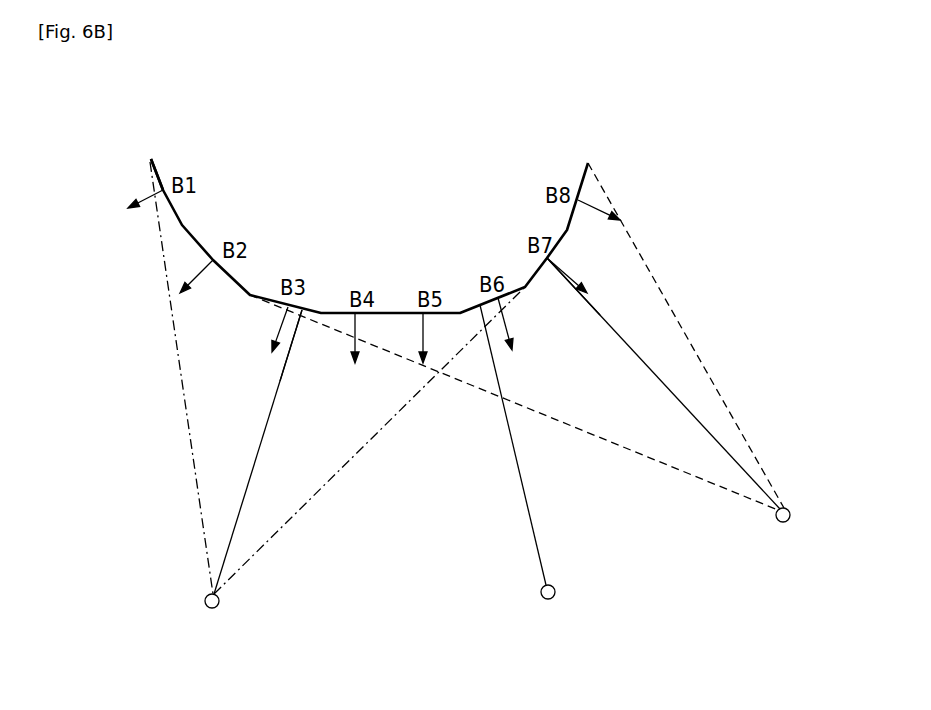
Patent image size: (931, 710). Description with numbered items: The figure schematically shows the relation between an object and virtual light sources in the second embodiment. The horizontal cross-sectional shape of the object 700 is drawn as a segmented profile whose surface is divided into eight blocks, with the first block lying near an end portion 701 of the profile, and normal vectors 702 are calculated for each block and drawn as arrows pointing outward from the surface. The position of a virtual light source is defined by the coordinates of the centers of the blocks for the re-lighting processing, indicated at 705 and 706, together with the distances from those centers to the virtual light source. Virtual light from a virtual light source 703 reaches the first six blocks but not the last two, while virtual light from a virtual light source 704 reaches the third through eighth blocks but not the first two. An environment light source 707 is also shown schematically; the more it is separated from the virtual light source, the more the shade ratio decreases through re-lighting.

The object 700 is at (414, 172).
The end portion of reflective surface 701 is at (152, 158).
The normal vector 702 is at (123, 207).
The virtual light source 703 is at (213, 608).
The virtual light source 704 is at (784, 522).
The block center for re-lighting processing 705 is at (303, 309).
The block center for re-lighting processing 706 is at (537, 268).
The environment light source 707 is at (551, 599).